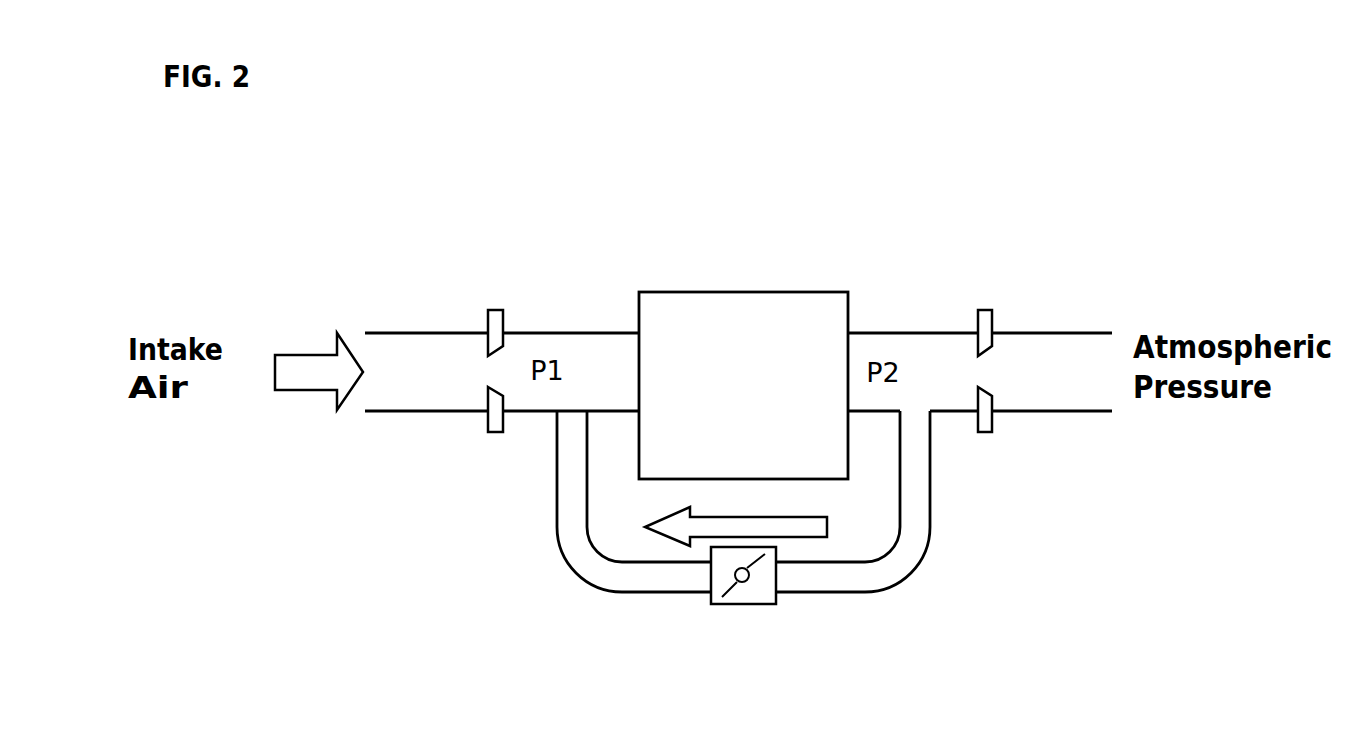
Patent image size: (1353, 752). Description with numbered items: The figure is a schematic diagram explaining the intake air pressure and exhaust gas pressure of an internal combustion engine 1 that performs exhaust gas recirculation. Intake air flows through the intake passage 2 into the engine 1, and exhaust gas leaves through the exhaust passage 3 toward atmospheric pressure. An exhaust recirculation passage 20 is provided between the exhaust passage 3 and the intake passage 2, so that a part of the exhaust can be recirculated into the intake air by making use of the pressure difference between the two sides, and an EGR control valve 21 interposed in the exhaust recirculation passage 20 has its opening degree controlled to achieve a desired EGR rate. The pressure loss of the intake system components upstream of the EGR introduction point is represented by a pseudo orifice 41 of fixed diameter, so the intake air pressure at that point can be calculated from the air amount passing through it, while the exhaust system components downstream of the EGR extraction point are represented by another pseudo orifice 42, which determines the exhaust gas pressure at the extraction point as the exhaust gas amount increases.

The internal combustion engine 1 is at (764, 292).
The intake passage 2 is at (410, 331).
The exhaust passage 3 is at (1062, 331).
The exhaust recirculation passage 20 is at (883, 575).
The EGR control valve 21 is at (732, 606).
The pseudo orifice 41 is at (498, 292).
The pseudo orifice 42 is at (986, 292).